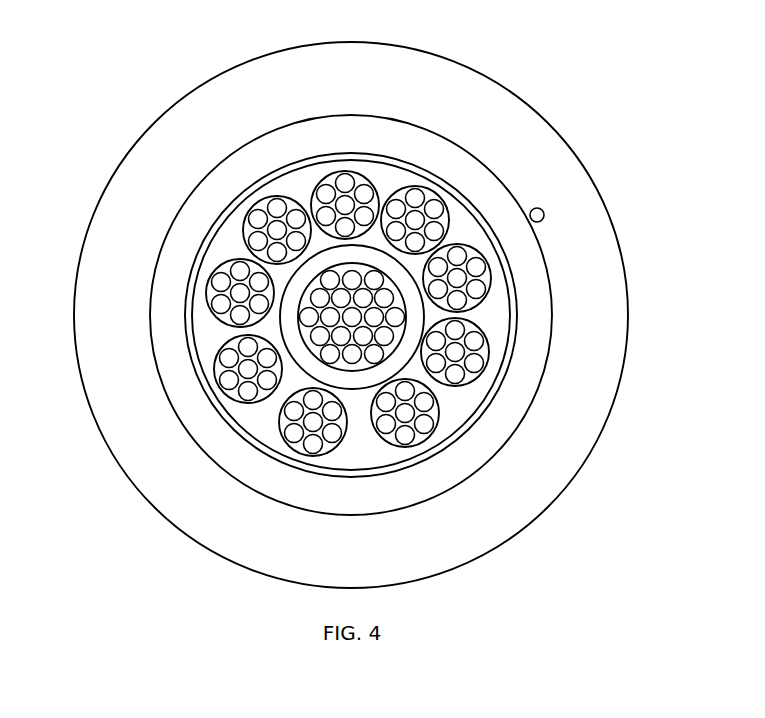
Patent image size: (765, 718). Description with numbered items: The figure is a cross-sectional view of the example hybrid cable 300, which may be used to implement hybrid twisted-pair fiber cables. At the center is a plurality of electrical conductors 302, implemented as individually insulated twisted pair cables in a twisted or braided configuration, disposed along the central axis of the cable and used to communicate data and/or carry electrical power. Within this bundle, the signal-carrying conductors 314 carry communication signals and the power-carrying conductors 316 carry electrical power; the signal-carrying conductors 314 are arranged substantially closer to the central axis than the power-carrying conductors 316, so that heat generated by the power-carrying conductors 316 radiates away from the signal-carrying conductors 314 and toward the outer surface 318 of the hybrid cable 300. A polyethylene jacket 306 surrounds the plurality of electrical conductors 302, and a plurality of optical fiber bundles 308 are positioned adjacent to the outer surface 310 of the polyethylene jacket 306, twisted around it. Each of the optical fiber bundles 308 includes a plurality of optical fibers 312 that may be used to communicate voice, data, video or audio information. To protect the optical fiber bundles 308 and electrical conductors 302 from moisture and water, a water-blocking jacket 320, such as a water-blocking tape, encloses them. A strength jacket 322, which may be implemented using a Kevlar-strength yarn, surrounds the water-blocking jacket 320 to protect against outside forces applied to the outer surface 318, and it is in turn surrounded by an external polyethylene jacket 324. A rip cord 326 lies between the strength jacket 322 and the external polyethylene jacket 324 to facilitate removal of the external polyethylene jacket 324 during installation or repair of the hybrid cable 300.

The hybrid cable 300 is at (124, 70).
The plurality of electrical conductors 302 is at (372, 377).
The polyethylene jacket 306 is at (400, 353).
The optical fiber bundles 308 is at (290, 202).
The outer surface 310 is at (352, 400).
The optical fibers 312 is at (317, 443).
The signal-carrying conductors 314 is at (363, 295).
The power-carrying conductors 316 is at (317, 335).
The outer surface 318 is at (547, 118).
The water-blocking jacket 320 is at (507, 360).
The strength jacket 322 is at (522, 400).
The external polyethylene jacket 324 is at (582, 430).
The rip cord 326 is at (545, 213).